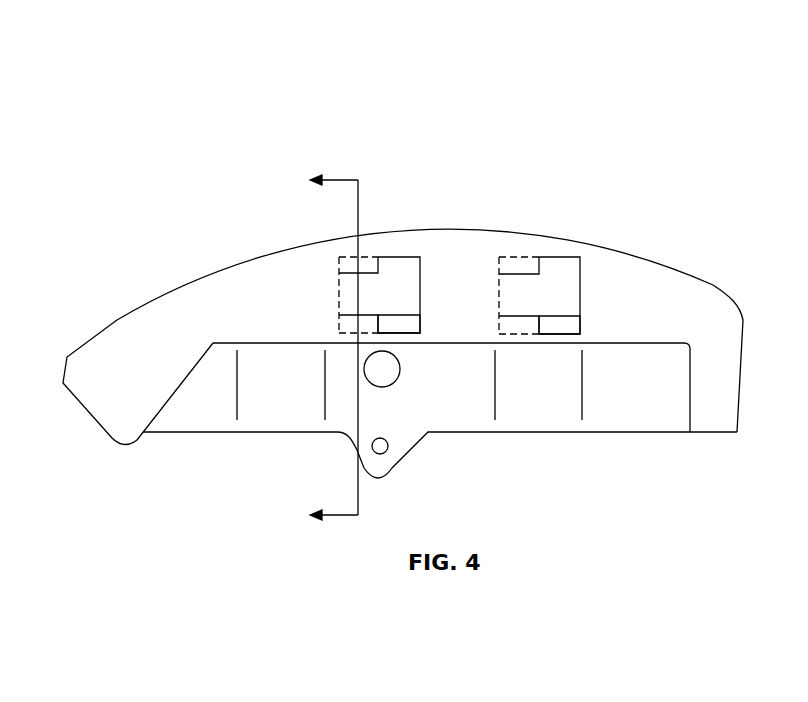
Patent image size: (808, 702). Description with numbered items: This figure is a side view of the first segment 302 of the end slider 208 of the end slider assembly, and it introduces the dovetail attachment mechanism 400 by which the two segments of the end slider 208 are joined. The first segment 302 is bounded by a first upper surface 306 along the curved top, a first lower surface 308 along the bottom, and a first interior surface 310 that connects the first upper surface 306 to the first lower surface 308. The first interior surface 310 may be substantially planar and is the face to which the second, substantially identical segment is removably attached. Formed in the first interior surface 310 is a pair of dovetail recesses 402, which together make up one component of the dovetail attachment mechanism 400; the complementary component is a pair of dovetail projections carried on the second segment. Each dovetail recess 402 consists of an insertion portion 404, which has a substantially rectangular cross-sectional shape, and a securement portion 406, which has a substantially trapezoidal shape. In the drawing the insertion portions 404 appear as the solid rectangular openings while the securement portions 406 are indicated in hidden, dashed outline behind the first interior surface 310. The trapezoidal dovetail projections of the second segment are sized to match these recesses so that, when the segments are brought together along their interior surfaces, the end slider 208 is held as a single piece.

The end slider 208 is at (166, 61).
The dovetail attachment mechanism 400 is at (520, 183).
The first segment 302 is at (390, 232).
The first upper surface 306 is at (660, 266).
The first lower surface 308 is at (706, 433).
The first interior surface 310 is at (242, 276).
The dovetail recess 402 is at (398, 273).
The insertion portion 404 is at (408, 318).
The securement portion 406 is at (345, 297).